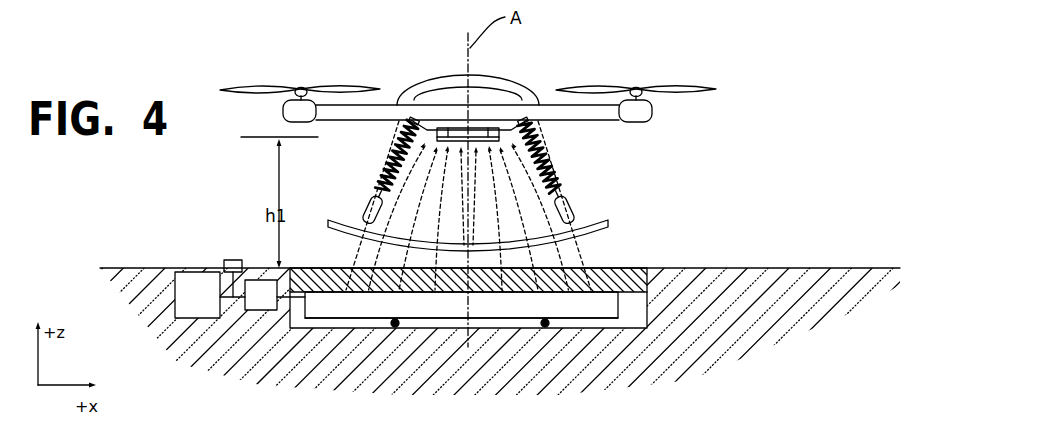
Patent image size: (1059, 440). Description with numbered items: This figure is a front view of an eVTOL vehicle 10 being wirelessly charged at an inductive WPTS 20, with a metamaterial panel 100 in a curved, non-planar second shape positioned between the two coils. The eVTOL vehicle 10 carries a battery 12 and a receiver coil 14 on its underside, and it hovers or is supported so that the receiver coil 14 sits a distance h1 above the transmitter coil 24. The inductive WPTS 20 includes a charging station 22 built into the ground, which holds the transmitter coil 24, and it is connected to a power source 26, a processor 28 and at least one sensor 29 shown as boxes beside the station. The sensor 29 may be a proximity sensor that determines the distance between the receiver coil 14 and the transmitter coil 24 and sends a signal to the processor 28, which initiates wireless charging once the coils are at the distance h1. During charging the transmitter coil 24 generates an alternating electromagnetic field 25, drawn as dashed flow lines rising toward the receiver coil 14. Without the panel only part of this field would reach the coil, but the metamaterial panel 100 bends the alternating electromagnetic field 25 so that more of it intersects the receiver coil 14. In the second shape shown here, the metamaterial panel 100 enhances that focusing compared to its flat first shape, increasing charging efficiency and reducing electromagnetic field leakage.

The eVTOL vehicle 10 is at (611, 36).
The battery 12 is at (488, 130).
The receiver coil 14 is at (448, 129).
The inductive WPTS 20 is at (770, 232).
The charging station 22 is at (821, 354).
The transmitter coil 24 is at (612, 326).
The alternating electromagnetic field 25 is at (603, 162).
The power source 26 is at (188, 319).
The processor 28 is at (252, 311).
The sensor 29 is at (233, 259).
The metamaterial panel 100 is at (600, 236).